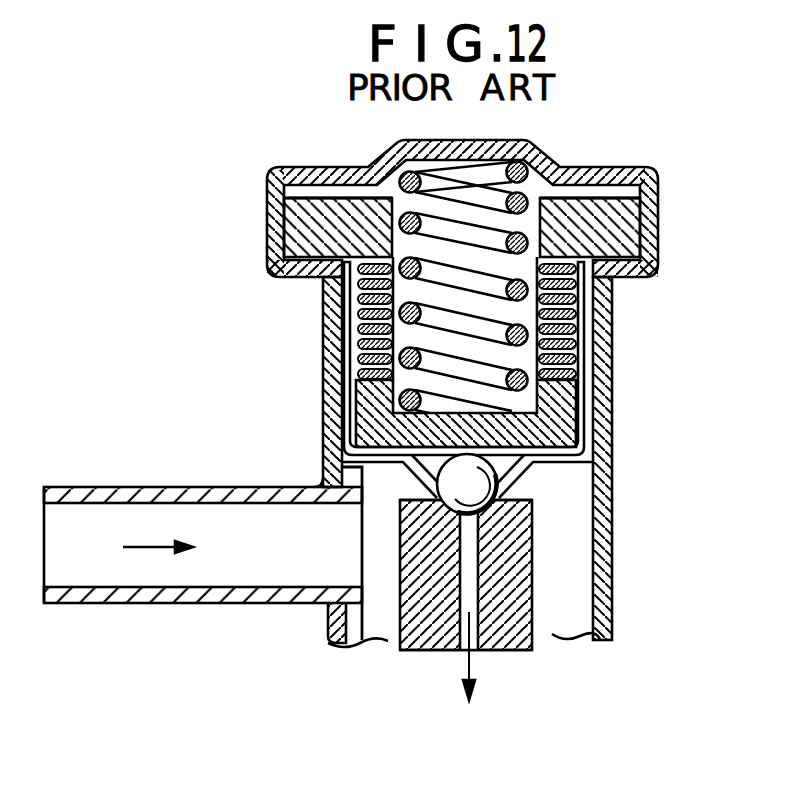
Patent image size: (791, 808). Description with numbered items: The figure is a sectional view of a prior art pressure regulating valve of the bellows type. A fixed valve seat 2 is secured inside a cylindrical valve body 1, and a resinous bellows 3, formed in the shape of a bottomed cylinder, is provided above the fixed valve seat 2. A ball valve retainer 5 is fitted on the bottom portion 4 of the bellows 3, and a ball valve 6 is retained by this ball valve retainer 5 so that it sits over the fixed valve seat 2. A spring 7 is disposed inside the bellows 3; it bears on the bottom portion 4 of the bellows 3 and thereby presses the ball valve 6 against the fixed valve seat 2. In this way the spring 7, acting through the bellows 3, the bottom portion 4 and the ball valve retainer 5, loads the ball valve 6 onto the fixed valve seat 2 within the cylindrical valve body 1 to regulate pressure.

The cylindrical valve body 1 is at (618, 392).
The fixed valve seat 2 is at (530, 572).
The resinous bellows 3 is at (577, 337).
The bottom portion of the bellows 4 is at (588, 432).
The ball valve retainer 5 is at (535, 466).
The ball valve 6 is at (433, 487).
The spring 7 is at (556, 171).